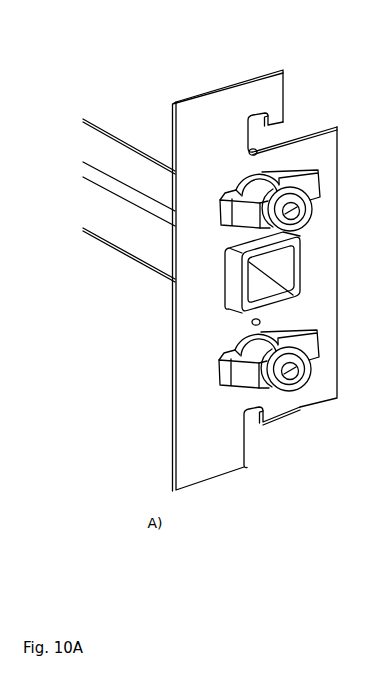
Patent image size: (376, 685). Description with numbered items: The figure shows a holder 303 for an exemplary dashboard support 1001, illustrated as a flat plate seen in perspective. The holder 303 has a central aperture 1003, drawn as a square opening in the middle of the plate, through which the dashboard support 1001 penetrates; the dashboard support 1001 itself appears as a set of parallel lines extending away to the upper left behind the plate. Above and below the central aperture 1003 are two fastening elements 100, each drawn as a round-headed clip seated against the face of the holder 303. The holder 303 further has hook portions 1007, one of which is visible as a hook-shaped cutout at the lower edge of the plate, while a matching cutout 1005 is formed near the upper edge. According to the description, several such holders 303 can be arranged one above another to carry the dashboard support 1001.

The clip nut fastener 100 is at (218, 208).
The holder 303 is at (240, 88).
The dashboard support 1001 is at (110, 147).
The central aperture 1003 is at (223, 292).
The upper hook notch 1005 is at (283, 95).
The hook portions 1007 is at (253, 433).